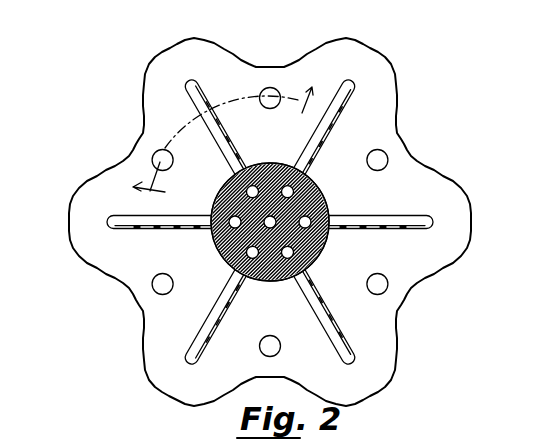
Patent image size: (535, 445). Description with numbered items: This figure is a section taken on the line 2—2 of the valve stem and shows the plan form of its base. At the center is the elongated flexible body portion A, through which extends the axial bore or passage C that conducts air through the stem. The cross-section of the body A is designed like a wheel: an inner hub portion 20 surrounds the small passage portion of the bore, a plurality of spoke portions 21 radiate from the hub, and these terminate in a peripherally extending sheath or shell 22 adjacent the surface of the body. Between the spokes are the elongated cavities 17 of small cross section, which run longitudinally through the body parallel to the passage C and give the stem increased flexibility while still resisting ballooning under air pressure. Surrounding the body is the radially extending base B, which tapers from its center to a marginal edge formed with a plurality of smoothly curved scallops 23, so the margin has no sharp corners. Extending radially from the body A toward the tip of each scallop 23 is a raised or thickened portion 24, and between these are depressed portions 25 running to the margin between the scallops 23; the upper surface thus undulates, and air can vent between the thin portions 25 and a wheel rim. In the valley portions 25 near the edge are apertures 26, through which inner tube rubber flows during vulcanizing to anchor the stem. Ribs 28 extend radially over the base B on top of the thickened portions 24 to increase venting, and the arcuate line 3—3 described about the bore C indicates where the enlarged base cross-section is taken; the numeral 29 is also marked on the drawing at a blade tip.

The section line 2— 2 is at (270, 222).
The arcuate section line 3— 3 is at (223, 149).
The elongated cavities 17 is at (281, 283).
The inner hub portion 20 is at (218, 312).
The spoke portions 21 is at (263, 167).
The sheath or shell 22 is at (227, 190).
The scallops 23 is at (180, 40).
The raised or thickened portion 24 is at (113, 207).
The depressed portion 25 is at (284, 77).
The apertures 26 is at (376, 161).
The ribs 28 is at (324, 300).
The blade tip 29 is at (431, 228).
The body portion A is at (325, 242).
The base B is at (418, 165).
The axial bore or passage C is at (325, 200).